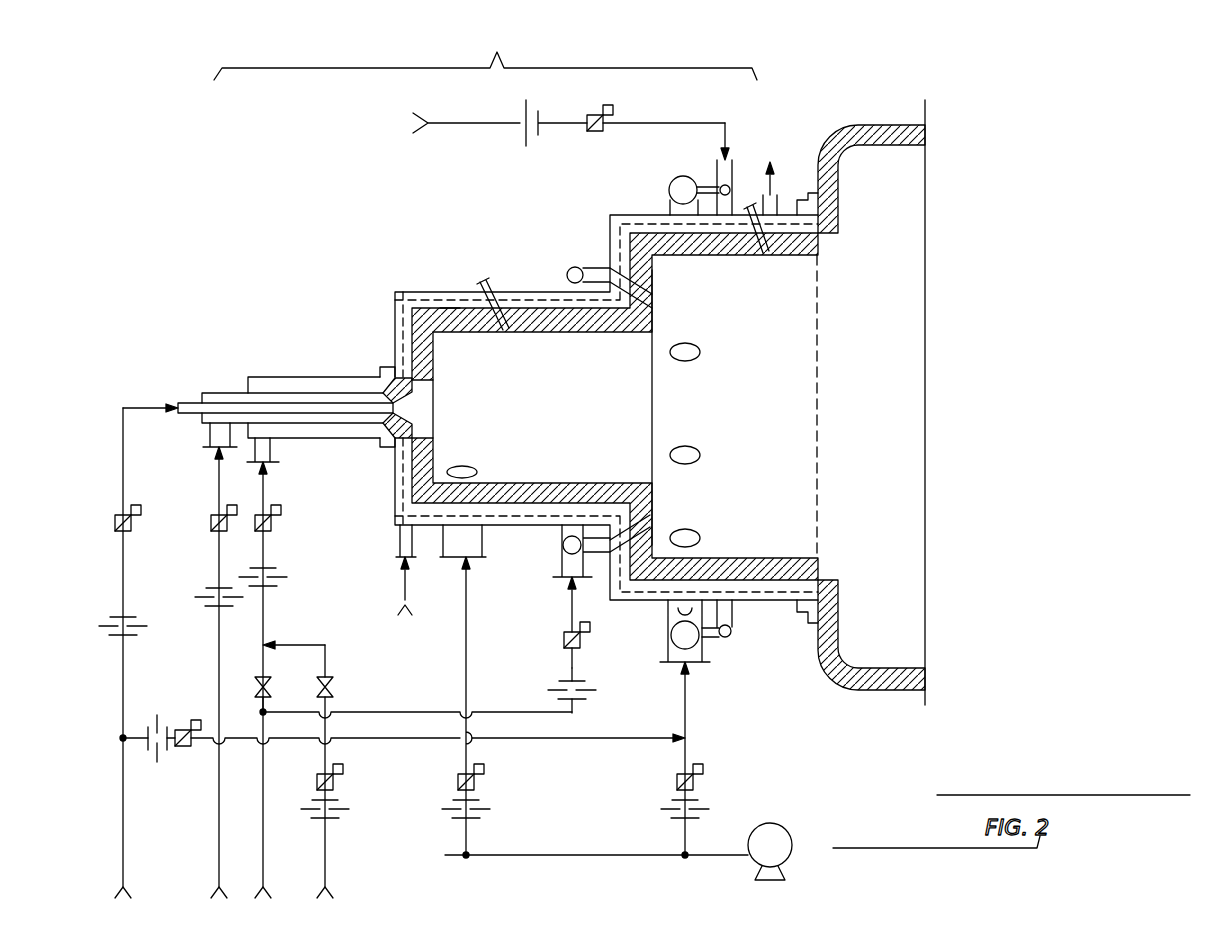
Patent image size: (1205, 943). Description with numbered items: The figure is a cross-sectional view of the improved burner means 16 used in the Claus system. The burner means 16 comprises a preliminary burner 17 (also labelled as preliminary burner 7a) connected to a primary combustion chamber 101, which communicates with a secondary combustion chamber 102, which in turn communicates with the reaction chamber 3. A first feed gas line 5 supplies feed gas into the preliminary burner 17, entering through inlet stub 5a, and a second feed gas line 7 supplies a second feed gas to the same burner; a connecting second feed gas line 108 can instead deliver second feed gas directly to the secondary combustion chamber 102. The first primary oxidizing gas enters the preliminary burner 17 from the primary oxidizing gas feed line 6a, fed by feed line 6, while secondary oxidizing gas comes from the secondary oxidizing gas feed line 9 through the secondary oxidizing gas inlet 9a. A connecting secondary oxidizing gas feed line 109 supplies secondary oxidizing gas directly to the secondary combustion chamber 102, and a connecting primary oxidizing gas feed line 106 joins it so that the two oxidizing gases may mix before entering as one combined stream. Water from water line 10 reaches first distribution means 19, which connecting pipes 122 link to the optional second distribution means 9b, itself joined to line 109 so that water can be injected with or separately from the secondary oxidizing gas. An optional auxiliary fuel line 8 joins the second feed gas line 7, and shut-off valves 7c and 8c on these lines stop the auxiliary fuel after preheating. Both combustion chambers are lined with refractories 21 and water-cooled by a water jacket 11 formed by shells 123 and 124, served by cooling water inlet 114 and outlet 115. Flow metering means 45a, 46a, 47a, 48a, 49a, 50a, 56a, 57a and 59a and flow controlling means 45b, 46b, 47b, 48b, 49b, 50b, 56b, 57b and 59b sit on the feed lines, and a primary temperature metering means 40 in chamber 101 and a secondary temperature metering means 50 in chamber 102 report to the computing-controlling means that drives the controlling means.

The reaction chamber 3 is at (901, 377).
The first feed gas line 5 is at (216, 843).
The oxygen inlet stub 5a is at (208, 448).
The feed line 6 is at (120, 843).
The primary oxidizing gas feed line 6a is at (188, 404).
The second feed gas line 7 is at (260, 843).
The preliminary burner 7a is at (274, 452).
The shut-off valve 7c is at (268, 682).
The auxiliary fuel line 8 is at (328, 850).
The shut-off valve 8c is at (335, 680).
The secondary oxidizing gas feed line 9 is at (716, 856).
The secondary oxidizing gas inlet 9a is at (468, 466).
The second distribution means 9b is at (700, 343).
The water line 10 is at (428, 126).
The water jacket 11 is at (407, 300).
The burner means 16 is at (485, 54).
The preliminary burner 17 is at (305, 376).
The first distribution means 19 is at (737, 165).
The refractories 21 is at (480, 333).
The primary temperature metering means 40 is at (485, 290).
The flow metering means 45a is at (206, 606).
The flow controlling means 45b is at (211, 527).
The flow metering means 46a is at (112, 620).
The flow controlling means 46b is at (115, 524).
The flow metering means 47a is at (275, 568).
The flow controlling means 47b is at (272, 524).
The flow metering means 48a is at (345, 810).
The flow controlling means 48b is at (340, 780).
The flow metering means 49a is at (484, 810).
The flow controlling means 49b is at (478, 784).
The secondary temperature metering means 50 is at (753, 202).
The flow metering means 50a is at (518, 130).
The flow controlling means 50b is at (595, 135).
The flow metering means 56a is at (155, 758).
The flow controlling means 56b is at (183, 728).
The flow metering means 57a is at (588, 690).
The flow controlling means 57b is at (560, 640).
The flow metering means 59a is at (706, 810).
The flow controlling means 59b is at (700, 779).
The primary combustion chamber 101 is at (584, 378).
The secondary combustion chamber 102 is at (802, 387).
The connecting primary oxidizing gas feed line 106 is at (612, 738).
The connecting second feed gas line 108 is at (392, 712).
The connecting secondary oxidizing gas feed line 109 is at (690, 712).
The cooling water inlet 114 is at (398, 540).
The cooling water outlet 115 is at (787, 200).
The connecting pipes 122 is at (710, 186).
The shell 123 is at (412, 300).
The shell 124 is at (448, 310).